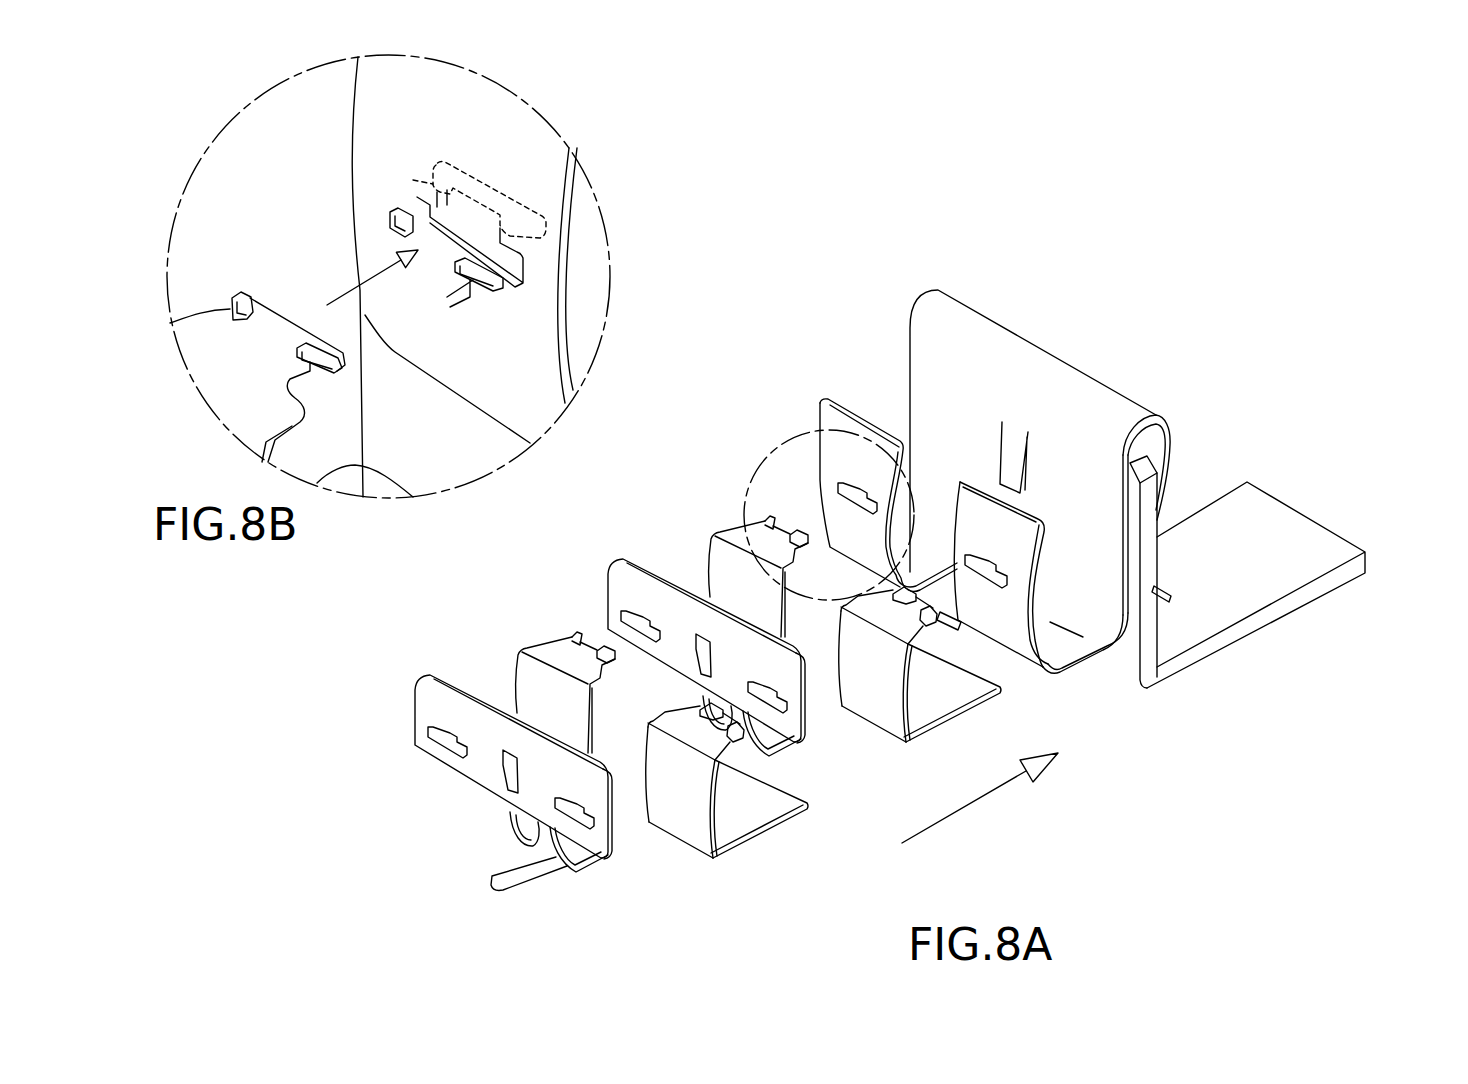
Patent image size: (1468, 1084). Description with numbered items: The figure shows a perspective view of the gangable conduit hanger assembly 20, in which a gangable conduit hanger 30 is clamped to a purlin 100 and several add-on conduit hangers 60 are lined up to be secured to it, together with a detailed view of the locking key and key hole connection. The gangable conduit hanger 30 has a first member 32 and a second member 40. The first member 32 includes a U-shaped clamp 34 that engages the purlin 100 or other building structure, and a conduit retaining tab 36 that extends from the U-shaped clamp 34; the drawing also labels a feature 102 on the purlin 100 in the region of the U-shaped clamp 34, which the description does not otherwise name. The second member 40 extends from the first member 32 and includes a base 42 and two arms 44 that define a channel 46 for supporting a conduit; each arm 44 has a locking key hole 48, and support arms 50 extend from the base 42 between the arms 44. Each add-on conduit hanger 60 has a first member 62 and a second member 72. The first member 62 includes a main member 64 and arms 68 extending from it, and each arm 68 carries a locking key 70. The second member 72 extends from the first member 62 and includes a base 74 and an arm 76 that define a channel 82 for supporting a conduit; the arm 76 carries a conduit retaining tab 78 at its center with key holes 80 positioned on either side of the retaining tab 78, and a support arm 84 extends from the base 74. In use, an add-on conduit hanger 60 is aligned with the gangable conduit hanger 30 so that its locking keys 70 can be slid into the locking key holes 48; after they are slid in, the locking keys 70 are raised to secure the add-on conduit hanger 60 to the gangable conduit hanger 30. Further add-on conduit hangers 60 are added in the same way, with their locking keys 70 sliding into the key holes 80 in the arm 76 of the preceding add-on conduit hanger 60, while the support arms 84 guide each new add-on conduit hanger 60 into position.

In FIG. 8A, the gangable conduit hanger assembly 20 is at (855, 206).
In FIG. 8A, the gangable conduit hanger 30 is at (1000, 262).
In FIG. 8A, the first member 32 is at (1093, 375).
In FIG. 8A, the U-shaped clamp 34 is at (1155, 437).
In FIG. 8A, the conduit retaining tab 36 is at (1013, 463).
In FIG. 8A, the second member 40 is at (1057, 637).
In FIG. 8A, the base 42 is at (1083, 637).
In FIG. 8B, the arms 44 is at (508, 145).
In FIG. 8A, the arms 44 is at (833, 518).
In FIG. 8A, the channel 46 is at (1083, 633).
In FIG. 8B, the locking key hole 48 is at (455, 218).
In FIG. 8A, the locking key hole 48 is at (843, 505).
In FIG. 8A, the support arms 50 is at (940, 620).
In FIG. 8A, the add-on conduit hanger 60 is at (578, 546).
In FIG. 8A, the first member 62 is at (747, 847).
In FIG. 8A, the main member 64 is at (747, 818).
In FIG. 8A, the arms 68 is at (697, 837).
In FIG. 8B, the locking key 70 is at (520, 276).
In FIG. 8A, the locking key 70 is at (572, 637).
In FIG. 8A, the second member 72 is at (577, 878).
In FIG. 8A, the base 74 is at (643, 823).
In FIG. 8A, the arm 76 is at (697, 693).
In FIG. 8A, the conduit retaining tab 78 is at (500, 777).
In FIG. 8A, the key holes 80 is at (427, 735).
In FIG. 8A, the channel 82 is at (617, 823).
In FIG. 8A, the support arm 84 is at (510, 877).
In FIG. 8A, the purlin 100 is at (1272, 570).
In FIG. 8A, the panel rib 102 is at (1140, 473).